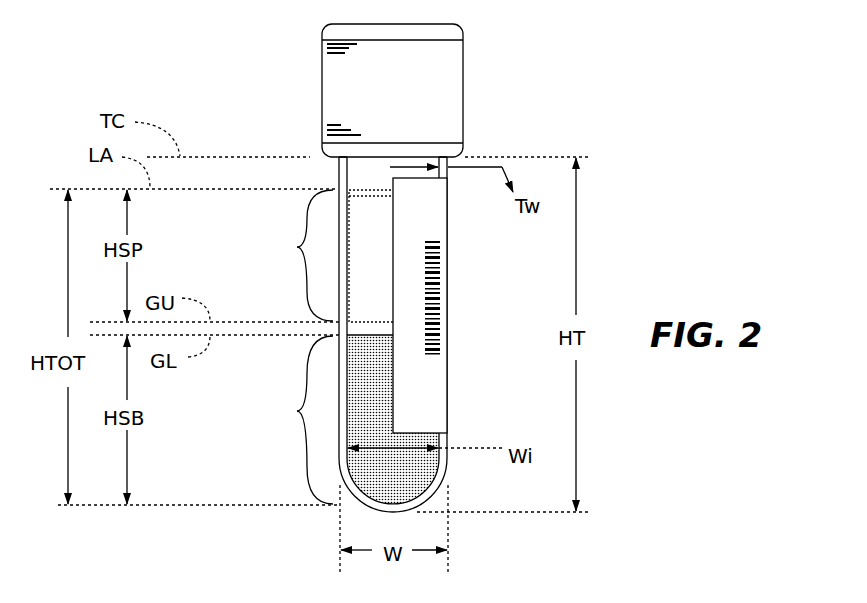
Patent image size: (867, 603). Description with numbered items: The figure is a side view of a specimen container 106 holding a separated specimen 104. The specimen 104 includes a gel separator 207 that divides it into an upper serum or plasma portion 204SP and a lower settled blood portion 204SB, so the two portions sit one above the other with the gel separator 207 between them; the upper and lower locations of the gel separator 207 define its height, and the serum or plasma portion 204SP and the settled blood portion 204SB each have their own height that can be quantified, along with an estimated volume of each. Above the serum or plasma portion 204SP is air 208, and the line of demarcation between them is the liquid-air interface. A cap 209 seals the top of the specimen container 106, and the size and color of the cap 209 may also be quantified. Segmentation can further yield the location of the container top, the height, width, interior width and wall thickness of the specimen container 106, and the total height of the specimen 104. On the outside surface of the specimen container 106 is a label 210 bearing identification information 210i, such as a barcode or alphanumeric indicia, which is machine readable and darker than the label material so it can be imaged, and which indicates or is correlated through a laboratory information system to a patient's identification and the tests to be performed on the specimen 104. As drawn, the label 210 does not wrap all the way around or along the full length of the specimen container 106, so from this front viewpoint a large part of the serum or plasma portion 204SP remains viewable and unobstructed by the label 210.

The specimen container 106 is at (347, 268).
The specimen 104 is at (335, 183).
The cap 209 is at (465, 75).
The air 208 is at (368, 178).
The gel separator 207 is at (377, 337).
The label 210 is at (456, 310).
The identification information 210i is at (440, 266).
The serum or plasma portion 204SP is at (296, 249).
The settled blood portion 204SB is at (296, 412).